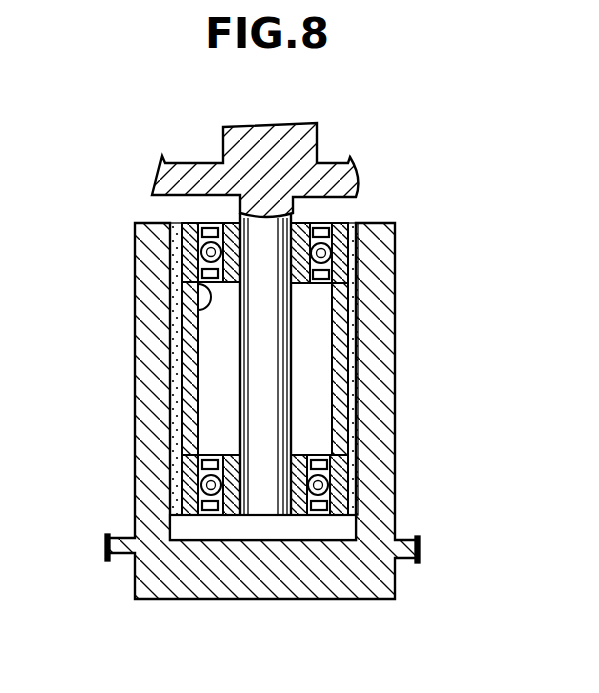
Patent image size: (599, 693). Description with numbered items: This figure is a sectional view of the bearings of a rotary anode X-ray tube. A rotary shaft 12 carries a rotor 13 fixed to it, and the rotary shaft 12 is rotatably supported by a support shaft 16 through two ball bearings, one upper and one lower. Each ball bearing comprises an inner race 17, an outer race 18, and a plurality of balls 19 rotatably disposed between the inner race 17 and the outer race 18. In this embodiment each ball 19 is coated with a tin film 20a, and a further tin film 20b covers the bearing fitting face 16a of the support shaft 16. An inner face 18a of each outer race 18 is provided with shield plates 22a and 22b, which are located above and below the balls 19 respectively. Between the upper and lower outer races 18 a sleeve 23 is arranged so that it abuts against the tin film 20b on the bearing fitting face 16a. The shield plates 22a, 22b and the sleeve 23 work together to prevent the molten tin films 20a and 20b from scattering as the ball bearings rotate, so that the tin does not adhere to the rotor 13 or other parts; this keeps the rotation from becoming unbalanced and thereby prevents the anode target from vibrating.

The rotary shaft 12 is at (294, 352).
The rotor 13 is at (333, 168).
The support shaft 16 is at (382, 478).
The bearing fitting face 16a is at (356, 527).
The inner race 17 is at (300, 284).
The outer race 18 is at (200, 223).
The inner face 18a is at (198, 285).
The balls 19 is at (180, 240).
The tin film 20a is at (218, 223).
The tin film 20b is at (170, 365).
The shield plate 22a is at (200, 223).
The shield plate 22b is at (200, 302).
The sleeve 23 is at (340, 364).